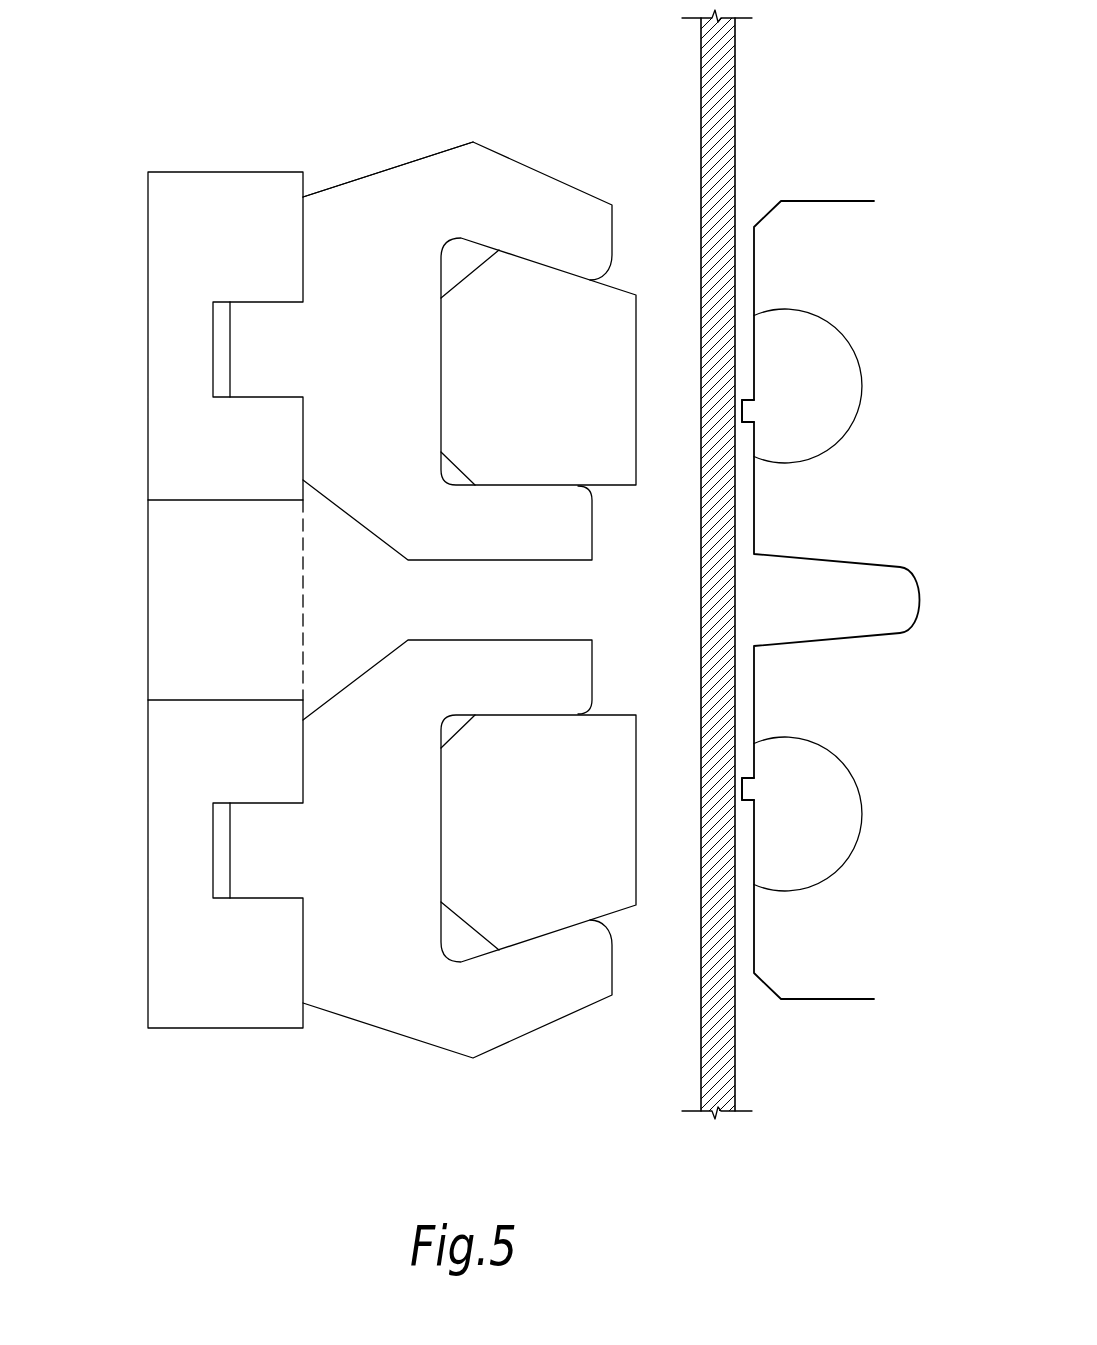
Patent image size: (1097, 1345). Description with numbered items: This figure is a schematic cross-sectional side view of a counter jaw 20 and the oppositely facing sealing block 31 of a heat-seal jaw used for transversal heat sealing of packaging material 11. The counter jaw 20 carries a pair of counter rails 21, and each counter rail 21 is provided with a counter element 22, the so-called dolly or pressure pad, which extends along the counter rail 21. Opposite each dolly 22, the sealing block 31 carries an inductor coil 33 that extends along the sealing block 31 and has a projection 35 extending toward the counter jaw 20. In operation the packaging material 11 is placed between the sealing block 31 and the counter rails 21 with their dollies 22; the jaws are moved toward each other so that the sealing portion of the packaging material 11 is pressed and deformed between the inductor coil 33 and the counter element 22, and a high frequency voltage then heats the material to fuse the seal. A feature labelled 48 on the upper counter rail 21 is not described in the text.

The packaging material 11 is at (731, 48).
The counter jaw 20 is at (178, 600).
The counter rail 21 is at (490, 167).
The counter element 22 is at (465, 368).
The sealing block 31 is at (848, 201).
The inductor coil 33 is at (841, 413).
The projection 35 is at (752, 411).
The spring upper arm 48 is at (397, 165).